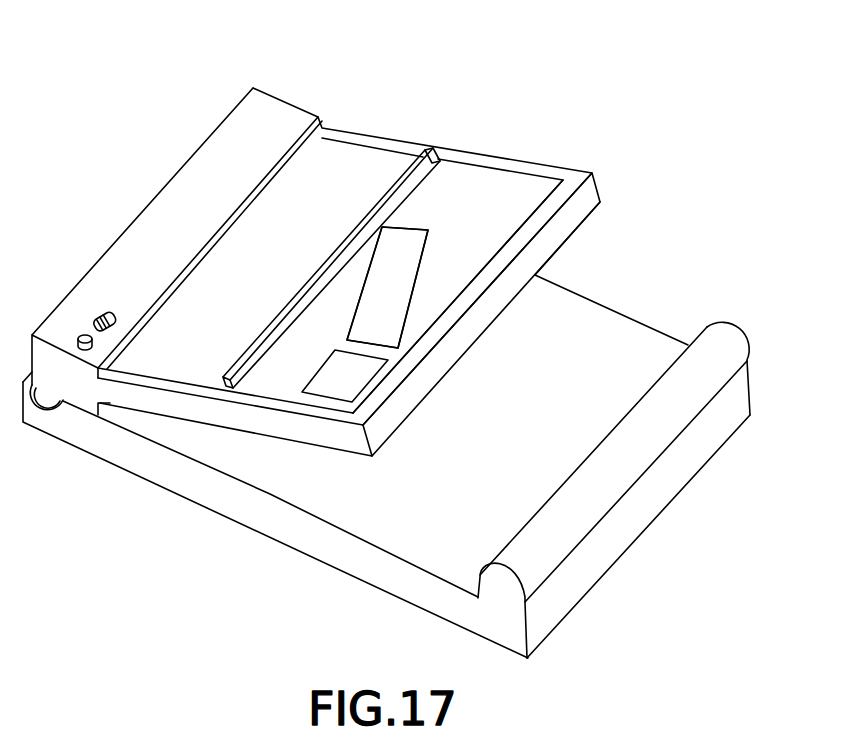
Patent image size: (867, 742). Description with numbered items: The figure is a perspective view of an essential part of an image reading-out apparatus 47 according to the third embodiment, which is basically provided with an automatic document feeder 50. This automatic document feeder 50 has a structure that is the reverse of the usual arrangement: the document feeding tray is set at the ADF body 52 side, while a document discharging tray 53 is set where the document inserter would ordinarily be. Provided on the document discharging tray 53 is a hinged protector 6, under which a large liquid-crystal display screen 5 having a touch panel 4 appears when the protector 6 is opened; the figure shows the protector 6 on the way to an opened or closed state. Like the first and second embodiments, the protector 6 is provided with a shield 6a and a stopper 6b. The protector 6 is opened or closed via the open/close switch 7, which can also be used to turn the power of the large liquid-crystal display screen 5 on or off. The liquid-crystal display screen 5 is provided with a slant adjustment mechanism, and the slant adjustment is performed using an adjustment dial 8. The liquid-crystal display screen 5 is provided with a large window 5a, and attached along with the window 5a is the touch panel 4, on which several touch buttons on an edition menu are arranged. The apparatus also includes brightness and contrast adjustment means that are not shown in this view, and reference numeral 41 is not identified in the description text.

The touch panel 4 is at (335, 382).
The liquid-crystal display screen 5 is at (495, 193).
The window 5a is at (398, 240).
The protector 6 is at (377, 67).
The shield 6a is at (360, 187).
The stopper 6b is at (425, 150).
The open/close switch 7 is at (83, 333).
The adjustment dial 8 is at (98, 308).
The base surface 41 is at (577, 325).
The image reading-out apparatus 47 is at (595, 62).
The automatic document feeder 50 is at (601, 234).
The ADF body 52 is at (667, 483).
The document discharging tray 53 is at (548, 160).